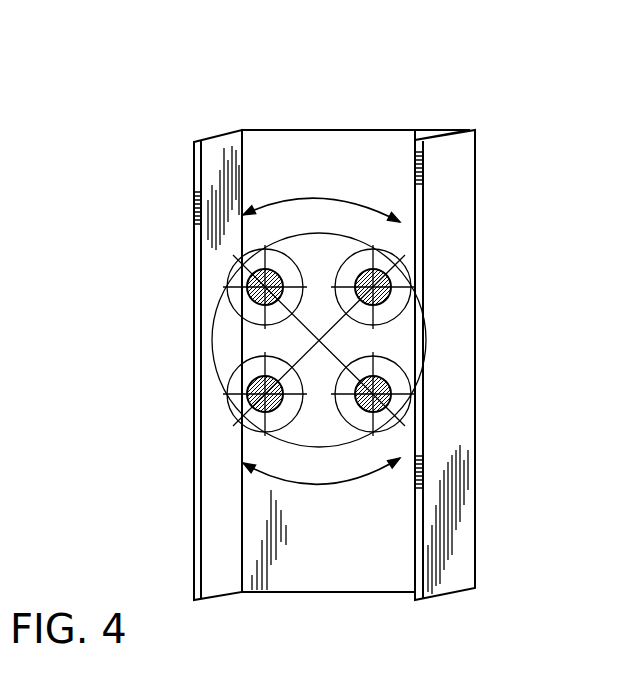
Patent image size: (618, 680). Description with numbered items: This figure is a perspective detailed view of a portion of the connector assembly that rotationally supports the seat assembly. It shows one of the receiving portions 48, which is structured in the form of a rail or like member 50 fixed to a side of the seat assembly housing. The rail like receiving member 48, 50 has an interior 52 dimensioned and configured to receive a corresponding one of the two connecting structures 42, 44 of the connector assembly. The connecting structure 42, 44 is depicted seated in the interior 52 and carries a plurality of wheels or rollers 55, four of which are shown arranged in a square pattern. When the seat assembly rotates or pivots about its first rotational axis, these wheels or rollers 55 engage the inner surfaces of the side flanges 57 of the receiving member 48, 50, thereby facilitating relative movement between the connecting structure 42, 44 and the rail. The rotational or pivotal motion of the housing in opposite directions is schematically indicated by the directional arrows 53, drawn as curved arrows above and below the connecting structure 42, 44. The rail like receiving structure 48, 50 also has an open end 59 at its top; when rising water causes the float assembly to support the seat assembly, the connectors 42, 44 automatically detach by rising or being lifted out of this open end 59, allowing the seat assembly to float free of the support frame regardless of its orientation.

The connecting structure 42 is at (235, 366).
The connecting structure 44 is at (222, 420).
The receiving portion 48 is at (388, 320).
The rail member 50 is at (380, 160).
The interior 52 is at (298, 558).
The directional arrows 53 is at (321, 197).
The wheels or rollers 55 is at (232, 268).
The side flanges 57 is at (194, 313).
The open end 59 is at (291, 130).